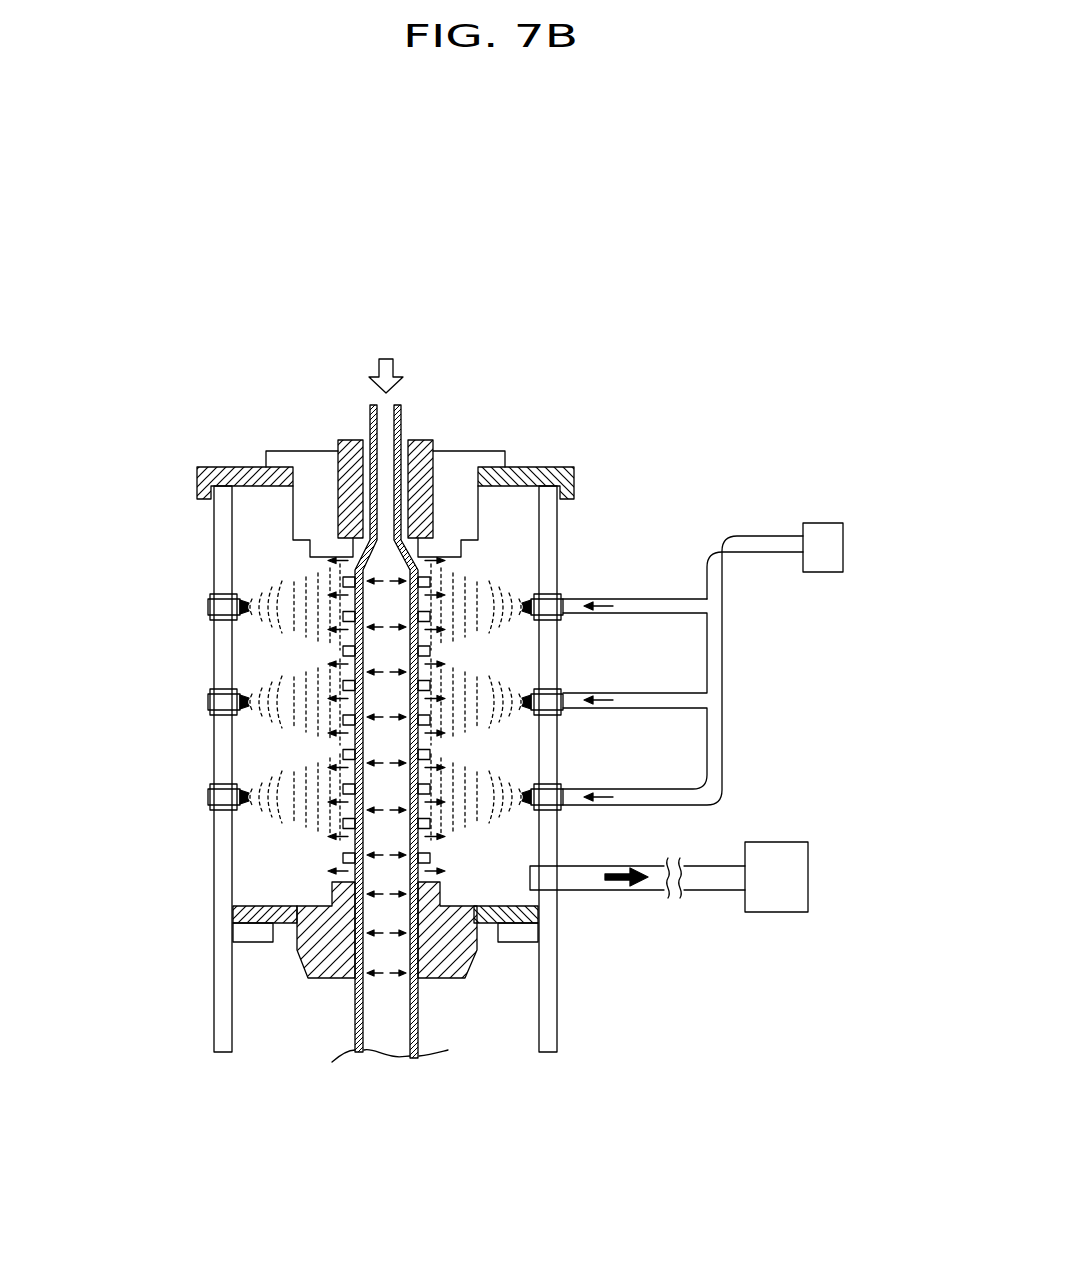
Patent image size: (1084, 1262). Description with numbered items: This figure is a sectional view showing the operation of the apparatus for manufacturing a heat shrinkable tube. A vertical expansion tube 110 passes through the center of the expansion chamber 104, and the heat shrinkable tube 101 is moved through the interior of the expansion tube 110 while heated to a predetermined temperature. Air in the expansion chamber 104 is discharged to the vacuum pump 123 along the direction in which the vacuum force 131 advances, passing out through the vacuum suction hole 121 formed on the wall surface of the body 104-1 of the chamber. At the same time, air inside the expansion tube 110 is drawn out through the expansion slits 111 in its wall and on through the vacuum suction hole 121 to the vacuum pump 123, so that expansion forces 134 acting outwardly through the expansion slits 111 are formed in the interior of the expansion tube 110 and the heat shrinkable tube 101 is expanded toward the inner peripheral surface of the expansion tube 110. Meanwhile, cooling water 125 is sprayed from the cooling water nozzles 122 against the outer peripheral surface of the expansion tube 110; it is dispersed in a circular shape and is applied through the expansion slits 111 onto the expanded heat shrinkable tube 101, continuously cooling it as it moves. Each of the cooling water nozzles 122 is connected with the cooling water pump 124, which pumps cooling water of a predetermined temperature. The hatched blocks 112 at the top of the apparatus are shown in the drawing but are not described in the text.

The expansion chamber 104 is at (727, 312).
The body 104-1 is at (213, 867).
The expansion tube 110 is at (314, 438).
The sealing blocks 112 is at (417, 446).
The expansion slits 111 is at (422, 592).
The cooling water 125 is at (285, 584).
The cooling water nozzles 122 is at (217, 610).
The cooling water pump 124 is at (823, 553).
The vacuum pump 123 is at (773, 842).
The vacuum suction hole 121 is at (542, 878).
The vacuum force 131 is at (636, 882).
The expansion forces 134 is at (422, 978).
The heat shrinkable tube 101 is at (355, 1023).